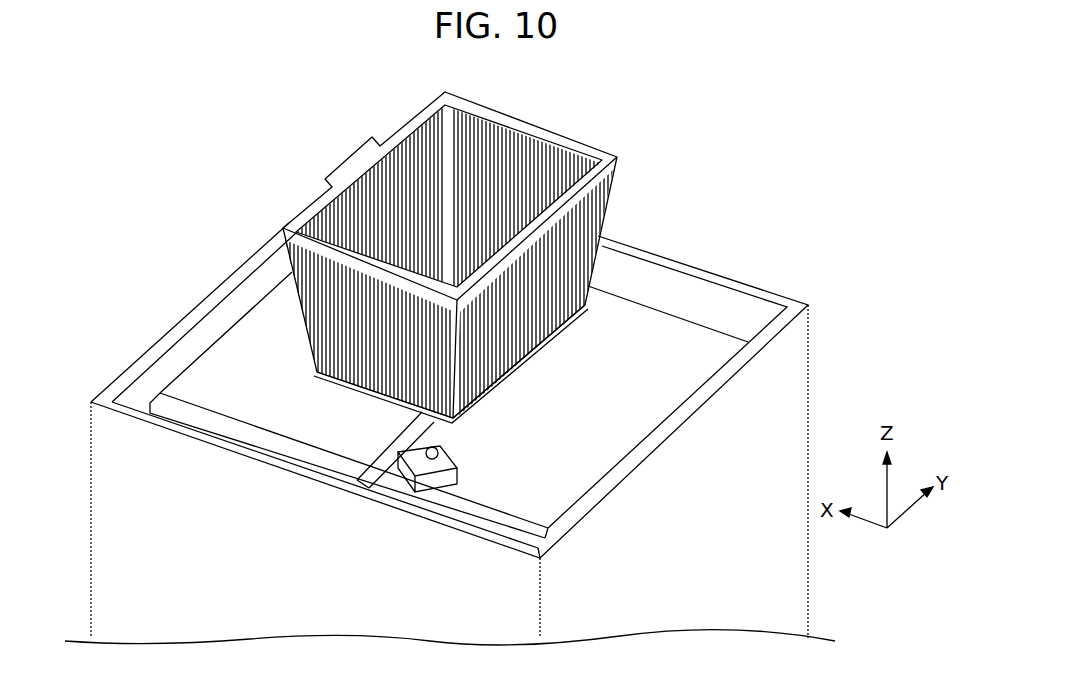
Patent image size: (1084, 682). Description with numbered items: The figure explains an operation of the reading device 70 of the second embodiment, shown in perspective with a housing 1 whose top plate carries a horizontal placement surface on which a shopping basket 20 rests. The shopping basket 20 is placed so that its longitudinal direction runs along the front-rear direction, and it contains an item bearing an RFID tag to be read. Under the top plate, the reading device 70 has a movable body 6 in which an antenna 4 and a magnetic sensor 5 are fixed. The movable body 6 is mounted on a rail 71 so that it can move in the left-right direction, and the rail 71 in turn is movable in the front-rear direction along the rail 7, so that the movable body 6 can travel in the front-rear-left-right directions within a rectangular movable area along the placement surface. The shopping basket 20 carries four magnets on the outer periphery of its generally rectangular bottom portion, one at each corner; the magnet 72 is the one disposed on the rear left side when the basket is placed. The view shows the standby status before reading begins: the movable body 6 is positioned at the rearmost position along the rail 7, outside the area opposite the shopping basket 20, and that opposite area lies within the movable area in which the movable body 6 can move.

The housing 1 is at (100, 476).
The shopping basket 20 is at (616, 153).
The reading device 70 is at (725, 252).
The rail 71 is at (210, 428).
The magnet 72 is at (460, 420).
The rail 7 is at (383, 438).
The antenna 4 is at (410, 490).
The magnetic sensor 5 is at (437, 456).
The movable body 6 is at (427, 539).